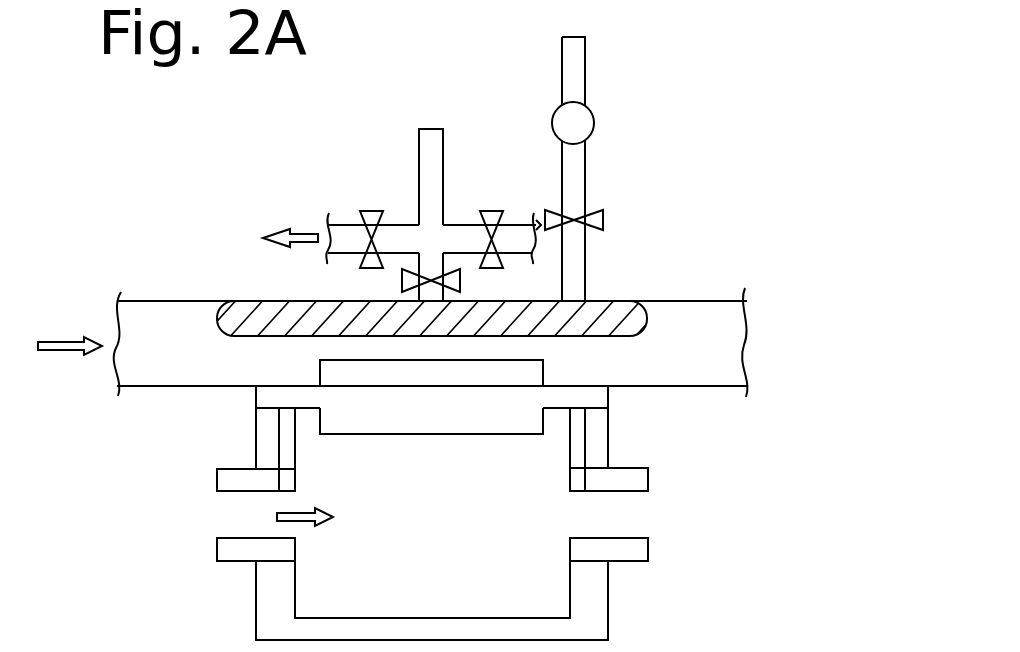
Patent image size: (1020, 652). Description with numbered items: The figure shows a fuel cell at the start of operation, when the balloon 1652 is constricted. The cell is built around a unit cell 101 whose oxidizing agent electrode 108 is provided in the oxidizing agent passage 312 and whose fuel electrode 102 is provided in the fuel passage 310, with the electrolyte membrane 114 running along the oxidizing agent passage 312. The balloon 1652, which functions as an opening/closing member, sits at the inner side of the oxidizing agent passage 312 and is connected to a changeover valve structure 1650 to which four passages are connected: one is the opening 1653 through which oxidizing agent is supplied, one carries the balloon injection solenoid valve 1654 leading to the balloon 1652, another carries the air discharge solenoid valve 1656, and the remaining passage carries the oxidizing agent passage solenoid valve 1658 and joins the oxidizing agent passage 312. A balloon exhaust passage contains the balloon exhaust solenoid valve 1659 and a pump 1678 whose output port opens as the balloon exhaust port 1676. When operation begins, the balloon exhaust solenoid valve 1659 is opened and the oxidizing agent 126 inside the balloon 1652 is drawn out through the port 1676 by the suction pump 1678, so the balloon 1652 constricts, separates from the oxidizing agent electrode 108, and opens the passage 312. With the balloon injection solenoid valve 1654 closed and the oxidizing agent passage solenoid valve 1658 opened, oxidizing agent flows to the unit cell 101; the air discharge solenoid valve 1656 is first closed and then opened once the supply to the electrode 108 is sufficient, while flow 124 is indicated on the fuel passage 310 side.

The unit cell 101 is at (435, 436).
The fuel electrode 102 is at (530, 422).
The oxidizing agent electrode 108 is at (515, 368).
The electrolyte membrane 114 is at (298, 397).
The exhaust flow arrow 124 is at (287, 522).
The oxidizing agent 126 is at (70, 329).
The fuel passage 310 is at (243, 503).
The oxidizing agent passage 312 is at (162, 322).
The changeover valve structure 1650 is at (525, 123).
The balloon 1652 is at (648, 318).
The oxidizing agent introducing port 1653 is at (427, 128).
The balloon injection solenoid valve 1654 is at (402, 280).
The air discharge solenoid valve 1656 is at (490, 210).
The oxidizing agent passage solenoid valve 1658 is at (371, 211).
The balloon exhaust solenoid valve 1659 is at (600, 208).
The balloon exhaust port 1676 is at (575, 37).
The pump 1678 is at (592, 118).